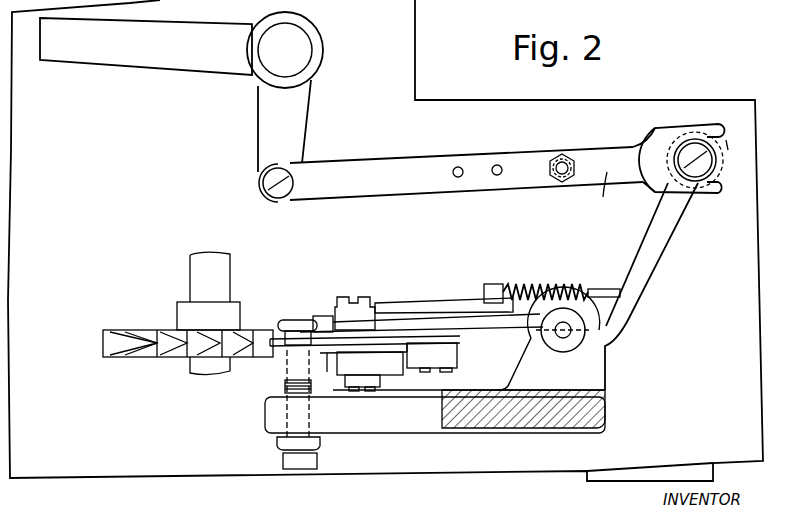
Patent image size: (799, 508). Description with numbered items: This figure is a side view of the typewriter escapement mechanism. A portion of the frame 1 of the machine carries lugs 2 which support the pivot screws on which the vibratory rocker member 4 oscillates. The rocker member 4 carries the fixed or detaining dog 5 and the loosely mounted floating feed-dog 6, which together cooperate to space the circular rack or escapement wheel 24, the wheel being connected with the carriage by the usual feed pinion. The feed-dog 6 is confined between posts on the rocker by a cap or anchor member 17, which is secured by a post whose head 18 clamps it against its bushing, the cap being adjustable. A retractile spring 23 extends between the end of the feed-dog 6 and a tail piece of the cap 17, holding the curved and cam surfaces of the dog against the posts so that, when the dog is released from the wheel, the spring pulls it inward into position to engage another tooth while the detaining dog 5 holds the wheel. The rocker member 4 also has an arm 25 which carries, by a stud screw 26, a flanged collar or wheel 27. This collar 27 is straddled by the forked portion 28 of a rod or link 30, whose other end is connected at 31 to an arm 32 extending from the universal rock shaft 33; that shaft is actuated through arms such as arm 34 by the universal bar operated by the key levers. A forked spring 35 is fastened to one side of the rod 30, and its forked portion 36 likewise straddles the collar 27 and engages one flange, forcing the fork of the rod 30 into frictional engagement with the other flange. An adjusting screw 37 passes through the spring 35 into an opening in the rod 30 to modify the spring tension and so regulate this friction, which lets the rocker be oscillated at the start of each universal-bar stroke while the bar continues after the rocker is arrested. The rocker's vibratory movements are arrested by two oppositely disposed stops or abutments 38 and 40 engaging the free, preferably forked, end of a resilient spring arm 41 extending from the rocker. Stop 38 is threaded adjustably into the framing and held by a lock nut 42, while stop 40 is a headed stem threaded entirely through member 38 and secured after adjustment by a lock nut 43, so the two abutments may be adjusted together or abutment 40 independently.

The frame 1 is at (474, 425).
The lugs 2 is at (593, 358).
The vibratory rocker member 4 is at (565, 343).
The fixed or detaining dog 5 is at (327, 372).
The feed-dog 6 is at (306, 318).
The cap or anchor member 17 is at (405, 300).
The head 18 is at (488, 284).
The retractile spring 23 is at (553, 288).
The escapement wheel 24 is at (138, 330).
The arm 25 is at (657, 238).
The stud screw 26 is at (698, 172).
The flanged collar or wheel 27 is at (728, 147).
The forked portion 28 is at (660, 127).
The rod or link 30 is at (466, 173).
The connection 31 is at (265, 183).
The arm 32 is at (284, 126).
The universal rock shaft 33 is at (285, 50).
The arm 34 is at (146, 46).
The forked spring 35 is at (612, 194).
The forked portion 36 is at (667, 133).
The adjusting screw 37 is at (556, 183).
The stop or abutment 38 is at (294, 353).
The stop or abutment 40 is at (287, 320).
The resilient spring arm 41 is at (410, 345).
The lock nut 42 is at (322, 441).
The lock nut 43 is at (316, 466).